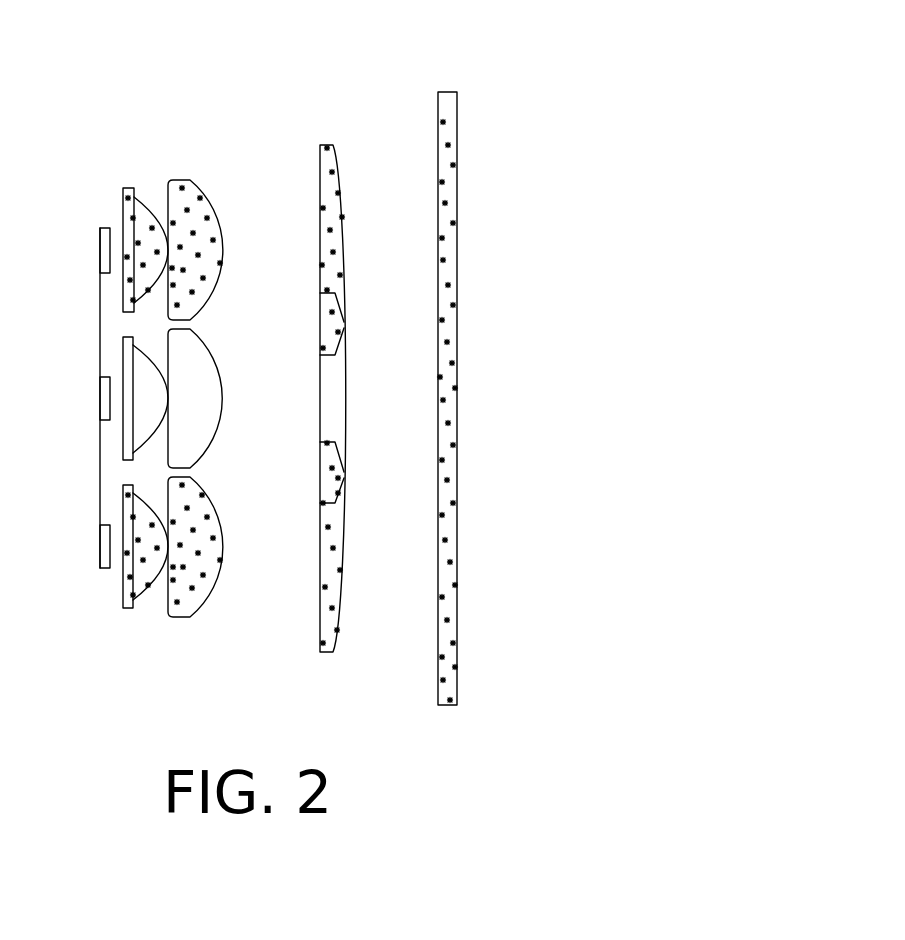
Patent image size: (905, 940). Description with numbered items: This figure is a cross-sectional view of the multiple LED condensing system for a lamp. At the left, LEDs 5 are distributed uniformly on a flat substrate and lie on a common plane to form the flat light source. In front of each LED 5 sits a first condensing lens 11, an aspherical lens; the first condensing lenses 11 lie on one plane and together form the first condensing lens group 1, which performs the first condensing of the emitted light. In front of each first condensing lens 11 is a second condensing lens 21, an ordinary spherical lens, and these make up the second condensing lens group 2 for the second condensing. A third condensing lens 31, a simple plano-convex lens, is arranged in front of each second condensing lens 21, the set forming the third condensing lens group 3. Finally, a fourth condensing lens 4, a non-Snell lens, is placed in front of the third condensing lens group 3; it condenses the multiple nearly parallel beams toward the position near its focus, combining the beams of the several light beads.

The first condensing lens group 1 is at (118, 182).
The second condensing lens group 2 is at (207, 363).
The third condensing lens group 3 is at (369, 355).
The fourth condensing lens 4 is at (457, 93).
The LED 5 is at (100, 253).
The first condensing lens 11 is at (130, 288).
The second condensing lens 21 is at (220, 233).
The third condensing lens 31 is at (342, 232).